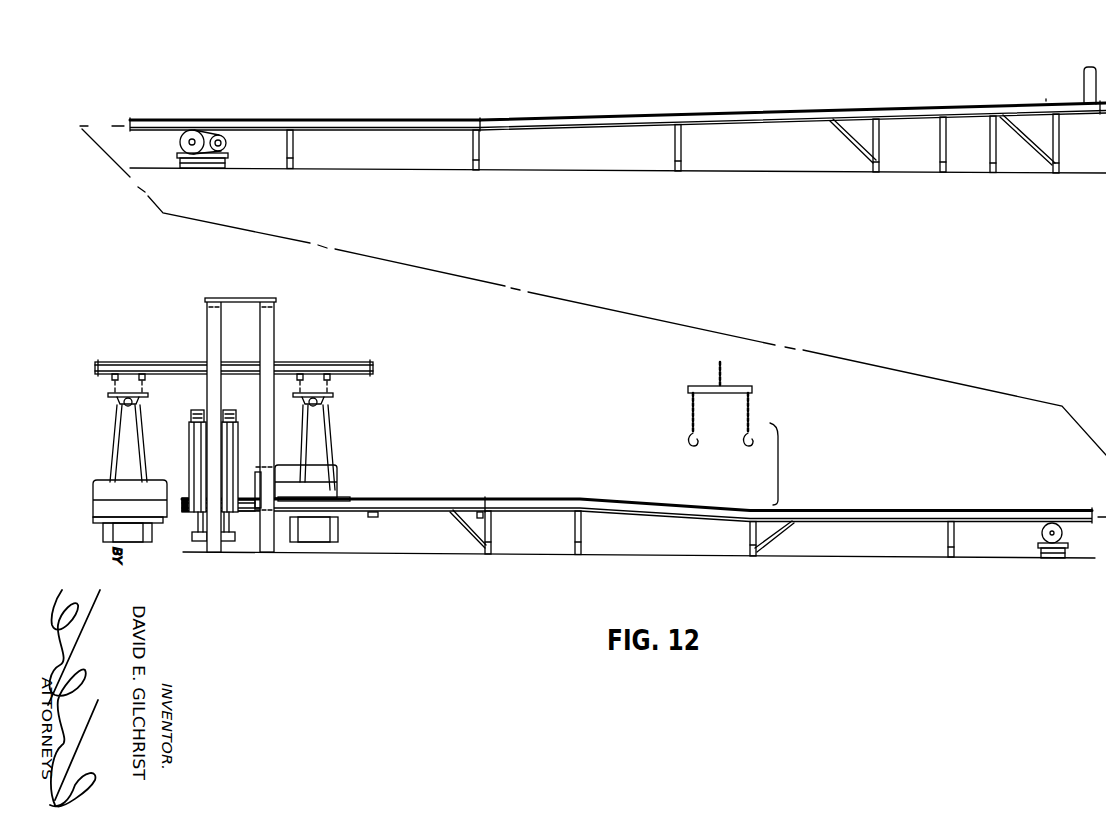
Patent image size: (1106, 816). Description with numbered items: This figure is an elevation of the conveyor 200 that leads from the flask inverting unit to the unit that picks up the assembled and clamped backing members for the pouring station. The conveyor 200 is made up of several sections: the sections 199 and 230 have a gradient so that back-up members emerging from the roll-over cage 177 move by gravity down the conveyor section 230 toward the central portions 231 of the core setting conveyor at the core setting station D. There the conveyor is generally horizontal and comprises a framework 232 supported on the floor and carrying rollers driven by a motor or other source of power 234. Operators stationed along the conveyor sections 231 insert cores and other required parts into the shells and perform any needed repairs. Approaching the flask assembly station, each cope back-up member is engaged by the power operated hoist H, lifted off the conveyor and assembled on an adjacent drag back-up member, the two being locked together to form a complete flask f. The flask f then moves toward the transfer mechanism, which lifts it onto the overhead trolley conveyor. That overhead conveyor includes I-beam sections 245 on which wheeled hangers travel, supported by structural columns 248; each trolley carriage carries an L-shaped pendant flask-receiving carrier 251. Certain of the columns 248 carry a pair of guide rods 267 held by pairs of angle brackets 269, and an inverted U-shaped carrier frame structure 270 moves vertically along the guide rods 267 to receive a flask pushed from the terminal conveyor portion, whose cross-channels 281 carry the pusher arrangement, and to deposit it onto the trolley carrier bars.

The roll-over cage 177 is at (1104, 68).
The conveyor section 199 is at (1047, 100).
The conveyor 200 is at (618, 299).
The conveyor section 230 is at (837, 108).
The central portions of the core setting conveyor 231 is at (446, 119).
The framework 232 is at (483, 150).
The motor 234 is at (234, 142).
The I-beam sections 245 is at (183, 362).
The structural columns 248 is at (267, 342).
The flask-receiving carrier 251 is at (113, 435).
The guide rods 267 is at (203, 458).
The angle brackets 269 is at (225, 548).
The carrier frame structure 270 is at (206, 486).
The cross-channels 281 is at (377, 517).
The core setting station D is at (359, 98).
The hoist H is at (758, 397).
The flask f is at (105, 483).